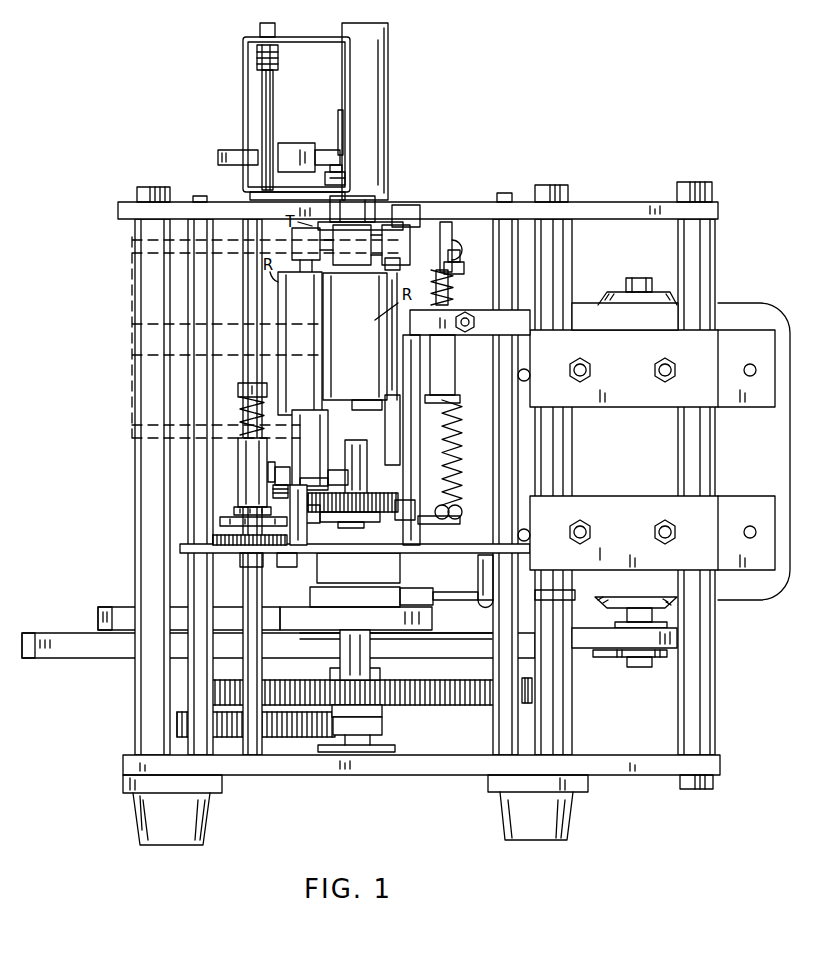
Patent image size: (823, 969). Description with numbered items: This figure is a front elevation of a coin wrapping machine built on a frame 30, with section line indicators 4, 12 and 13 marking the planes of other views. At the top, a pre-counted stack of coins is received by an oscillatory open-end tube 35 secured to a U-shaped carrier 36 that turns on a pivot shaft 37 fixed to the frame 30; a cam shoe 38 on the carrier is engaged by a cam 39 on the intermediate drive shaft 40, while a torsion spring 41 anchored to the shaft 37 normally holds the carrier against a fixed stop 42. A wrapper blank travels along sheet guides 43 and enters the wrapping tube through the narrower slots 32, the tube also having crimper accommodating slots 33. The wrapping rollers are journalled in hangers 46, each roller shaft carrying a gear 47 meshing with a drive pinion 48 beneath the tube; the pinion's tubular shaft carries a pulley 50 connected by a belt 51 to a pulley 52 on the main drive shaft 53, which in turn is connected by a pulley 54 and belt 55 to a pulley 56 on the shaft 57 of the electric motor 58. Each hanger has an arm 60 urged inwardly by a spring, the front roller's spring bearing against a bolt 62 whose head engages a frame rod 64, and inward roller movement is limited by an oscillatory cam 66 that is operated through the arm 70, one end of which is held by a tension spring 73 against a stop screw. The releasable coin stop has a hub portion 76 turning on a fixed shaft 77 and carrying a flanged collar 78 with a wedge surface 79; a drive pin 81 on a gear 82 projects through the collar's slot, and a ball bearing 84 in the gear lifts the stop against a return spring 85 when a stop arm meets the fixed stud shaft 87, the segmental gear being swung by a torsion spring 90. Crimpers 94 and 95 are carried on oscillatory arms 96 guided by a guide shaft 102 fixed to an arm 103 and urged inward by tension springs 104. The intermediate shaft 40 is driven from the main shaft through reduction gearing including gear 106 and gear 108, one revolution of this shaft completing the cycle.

The section line 4- 4 is at (98, 253).
The section line 12- 12 is at (225, 508).
The section line 13- 13 is at (198, 455).
The frame 30 is at (186, 202).
The narrower slots 32 is at (350, 208).
The crimper accommodating slots 33 is at (398, 210).
The coin stack receiving tube 35 is at (388, 80).
The U-shaped carrier 36 is at (243, 92).
The pivot shaft 37 is at (275, 102).
The cam shoe 38 is at (292, 143).
The cam 39 is at (220, 150).
The intermediate drive shaft 40 is at (372, 660).
The torsion spring 41 is at (278, 65).
The fixed stop 42 is at (325, 183).
The sheet guides 43 is at (132, 380).
The hanger 46 is at (292, 240).
The gear 47 is at (316, 516).
The drive pinion 48 is at (368, 493).
The pulley 50 is at (298, 607).
The belt 51 is at (98, 613).
The pulley 52 is at (118, 607).
The main drive shaft 53 is at (170, 580).
The pulley 54 is at (64, 658).
The belt 55 is at (448, 645).
The pulley 56 is at (608, 628).
The motor shaft 57 is at (640, 667).
The electric motor 58 is at (742, 305).
The arm 60 is at (468, 316).
The bolt 62 is at (456, 322).
The frame rod 64 is at (470, 250).
The oscillatory cam 66 is at (312, 478).
The arm 70 is at (452, 583).
The tension spring 73 is at (484, 604).
The hub portion 76 is at (240, 453).
The fixed shaft 77 is at (252, 300).
The flanged collar 78 is at (222, 520).
The wedge surface 79 is at (252, 496).
The drive pin 81 is at (244, 553).
The gear 82 is at (214, 538).
The ball bearing 84 is at (280, 553).
The return spring 85 is at (236, 392).
The fixed stud shaft 87 is at (275, 468).
The torsion spring 90 is at (278, 500).
The crimper 94 is at (400, 266).
The crimper 95 is at (395, 430).
The oscillatory arm 96 is at (448, 232).
The guide shaft 102 is at (448, 380).
The arm 103 is at (456, 360).
The tension spring 104 is at (458, 280).
The gear 106 is at (300, 740).
The gear 108 is at (450, 700).